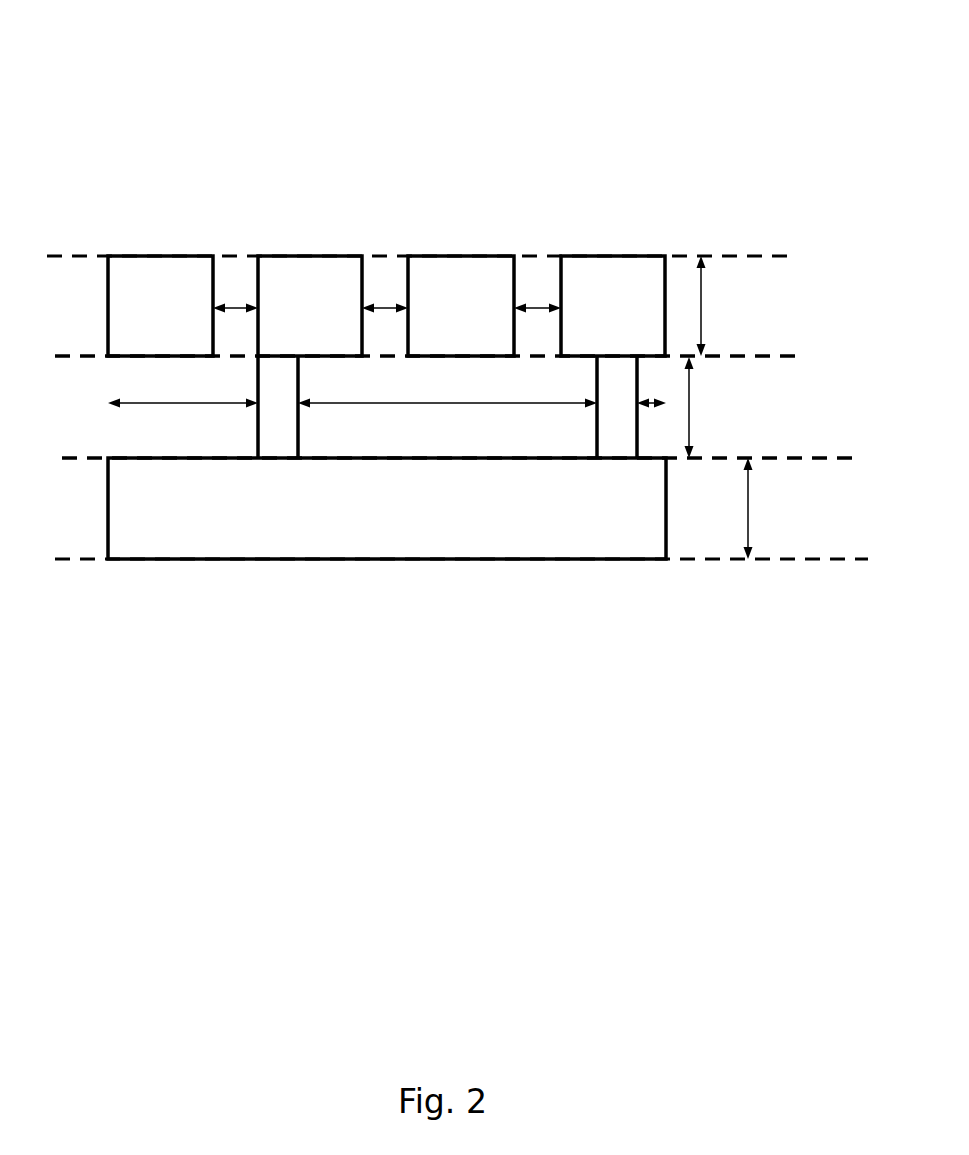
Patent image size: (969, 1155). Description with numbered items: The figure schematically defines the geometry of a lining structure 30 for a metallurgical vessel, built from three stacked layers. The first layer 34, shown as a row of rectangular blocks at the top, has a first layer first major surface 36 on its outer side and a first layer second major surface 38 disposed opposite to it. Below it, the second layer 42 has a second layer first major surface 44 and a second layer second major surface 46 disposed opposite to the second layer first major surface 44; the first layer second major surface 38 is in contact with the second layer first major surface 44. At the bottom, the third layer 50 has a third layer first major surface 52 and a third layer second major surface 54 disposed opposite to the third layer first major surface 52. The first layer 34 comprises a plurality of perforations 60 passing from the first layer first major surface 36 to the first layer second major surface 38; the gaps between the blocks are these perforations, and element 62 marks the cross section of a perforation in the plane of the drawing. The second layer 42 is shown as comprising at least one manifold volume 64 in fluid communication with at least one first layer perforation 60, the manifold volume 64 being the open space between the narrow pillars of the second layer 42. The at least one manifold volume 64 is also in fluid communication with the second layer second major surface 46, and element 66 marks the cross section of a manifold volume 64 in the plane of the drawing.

The lining structure 30 is at (424, 121).
The first layer 34 is at (698, 302).
The first layer first major surface 36 is at (95, 256).
The first layer second major surface 38 is at (70, 356).
The second layer 42 is at (692, 402).
The second layer first major surface 44 is at (70, 356).
The second layer second major surface 46 is at (680, 458).
The third layer 50 is at (747, 493).
The third layer first major surface 52 is at (680, 458).
The third layer second major surface 54 is at (760, 562).
The perforations 60 is at (395, 293).
The cross section of a perforation 62 is at (538, 306).
The manifold volume 64 is at (215, 433).
The cross section of a manifold volume 66 is at (543, 407).